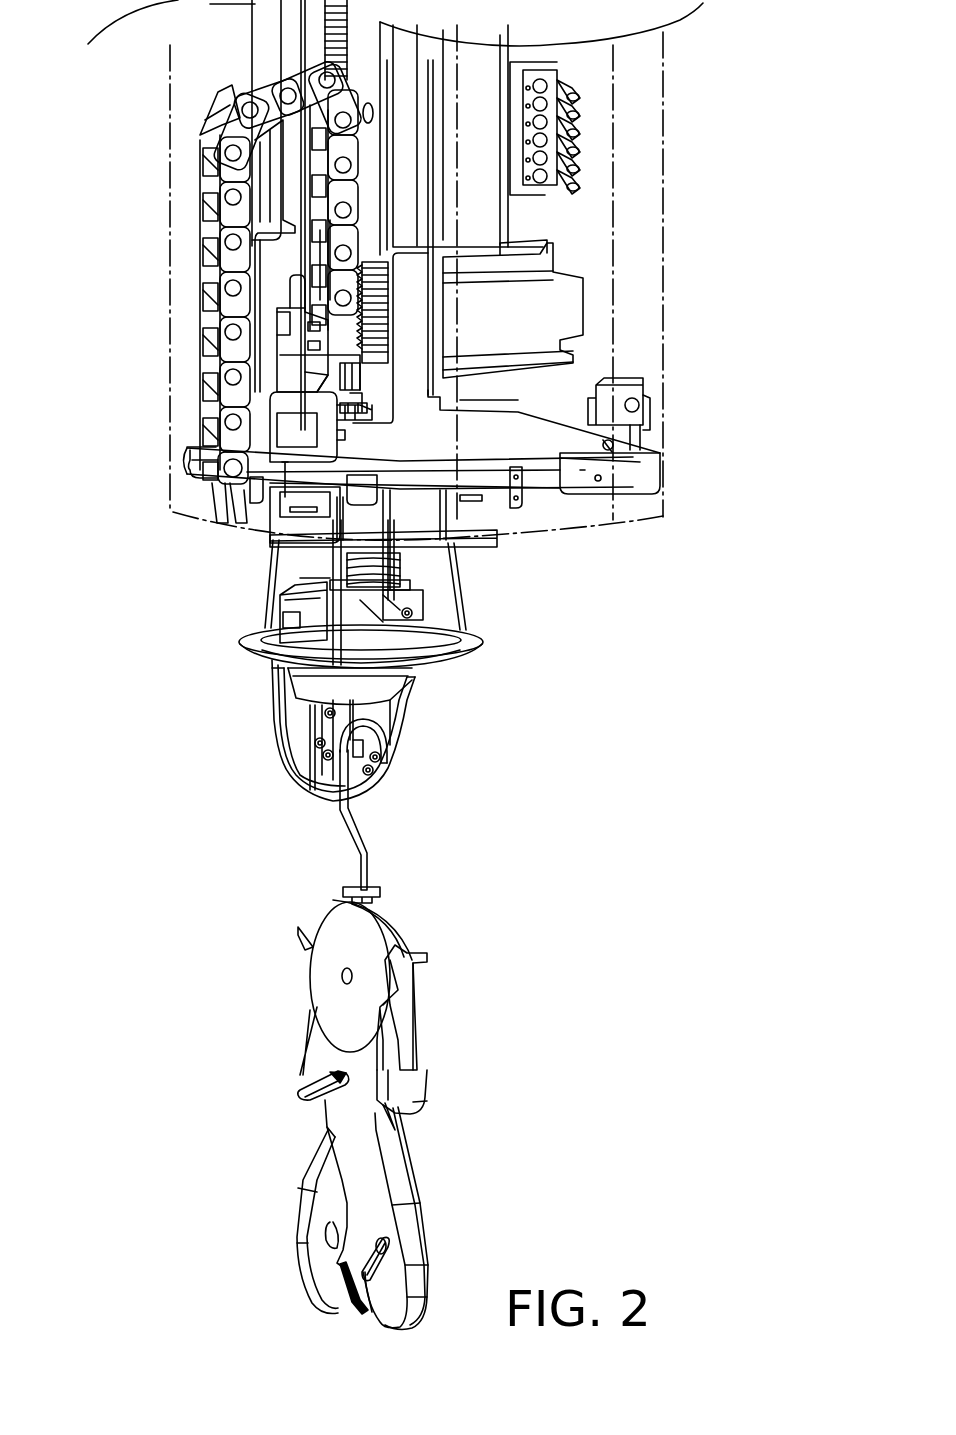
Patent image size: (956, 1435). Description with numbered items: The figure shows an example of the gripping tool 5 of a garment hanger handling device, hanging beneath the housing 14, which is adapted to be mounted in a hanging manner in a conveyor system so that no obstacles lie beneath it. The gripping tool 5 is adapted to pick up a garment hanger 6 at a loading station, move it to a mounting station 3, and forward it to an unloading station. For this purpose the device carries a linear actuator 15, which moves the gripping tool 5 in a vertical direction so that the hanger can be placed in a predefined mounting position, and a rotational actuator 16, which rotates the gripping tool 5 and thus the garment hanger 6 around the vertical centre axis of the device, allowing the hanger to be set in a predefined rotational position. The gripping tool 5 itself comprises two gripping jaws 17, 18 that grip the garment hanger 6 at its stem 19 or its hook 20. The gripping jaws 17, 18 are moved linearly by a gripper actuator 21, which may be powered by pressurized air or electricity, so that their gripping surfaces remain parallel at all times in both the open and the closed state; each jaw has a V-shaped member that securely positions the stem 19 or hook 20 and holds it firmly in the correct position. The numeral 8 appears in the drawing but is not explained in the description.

The mounting station 3 is at (250, 807).
The gripping tool 5 is at (418, 712).
The garment hanger 6 is at (400, 930).
The gripper hook 8 is at (272, 838).
The housing 14 is at (157, 253).
The linear actuator 15 is at (292, 37).
The rotational actuator 16 is at (470, 545).
The gripping jaw 17 is at (373, 713).
The gripping jaw 18 is at (300, 718).
The stem 19 is at (363, 838).
The hook 20 is at (393, 750).
The gripper actuator 21 is at (287, 615).